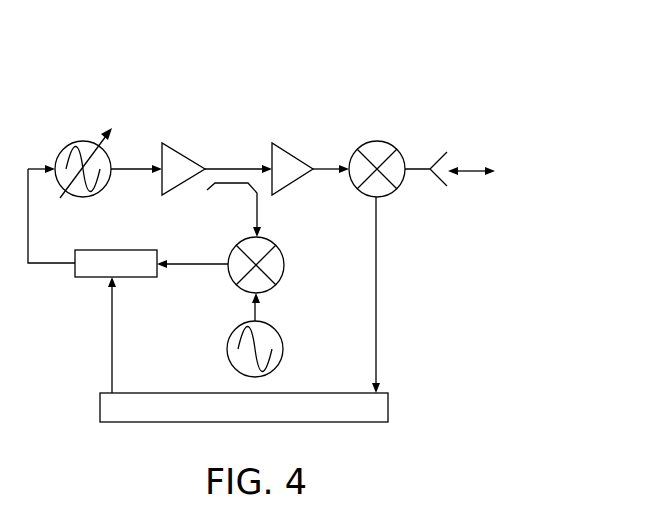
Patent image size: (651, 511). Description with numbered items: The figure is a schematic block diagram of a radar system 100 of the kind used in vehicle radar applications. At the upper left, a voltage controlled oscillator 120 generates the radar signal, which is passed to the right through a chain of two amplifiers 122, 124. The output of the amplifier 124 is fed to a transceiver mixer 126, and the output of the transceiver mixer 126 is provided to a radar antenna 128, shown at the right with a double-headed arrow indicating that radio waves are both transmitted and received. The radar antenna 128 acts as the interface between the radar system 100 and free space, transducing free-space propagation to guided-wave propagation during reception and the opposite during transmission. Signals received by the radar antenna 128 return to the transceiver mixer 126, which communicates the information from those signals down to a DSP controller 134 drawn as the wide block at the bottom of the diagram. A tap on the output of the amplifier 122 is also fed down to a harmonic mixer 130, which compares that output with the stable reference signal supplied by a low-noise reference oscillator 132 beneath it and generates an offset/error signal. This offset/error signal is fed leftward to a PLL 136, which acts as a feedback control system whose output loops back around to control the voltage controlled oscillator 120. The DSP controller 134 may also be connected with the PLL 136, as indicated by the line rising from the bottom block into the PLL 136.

The radar system 100 is at (432, 76).
The voltage controlled oscillator 120 is at (82, 140).
The amplifier 122 is at (172, 142).
The amplifier 124 is at (283, 148).
The transceiver mixer 126 is at (375, 141).
The radar antenna 128 is at (440, 185).
The harmonic mixer 130 is at (285, 265).
The low-noise reference oscillator 132 is at (283, 345).
The DSP controller 134 is at (388, 410).
The PLL 136 is at (112, 250).